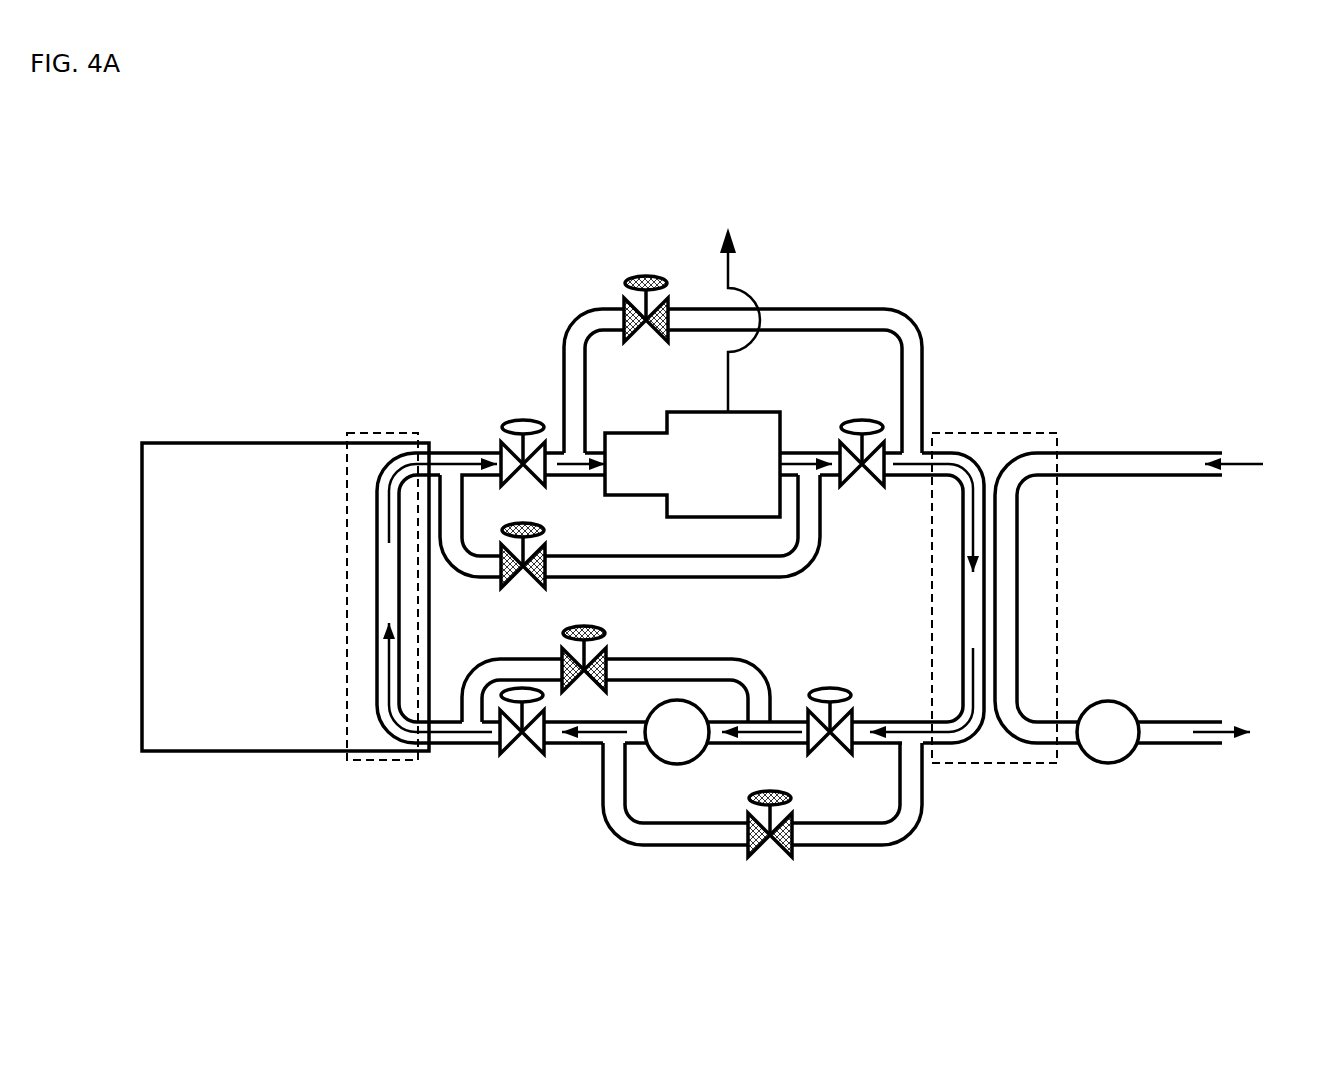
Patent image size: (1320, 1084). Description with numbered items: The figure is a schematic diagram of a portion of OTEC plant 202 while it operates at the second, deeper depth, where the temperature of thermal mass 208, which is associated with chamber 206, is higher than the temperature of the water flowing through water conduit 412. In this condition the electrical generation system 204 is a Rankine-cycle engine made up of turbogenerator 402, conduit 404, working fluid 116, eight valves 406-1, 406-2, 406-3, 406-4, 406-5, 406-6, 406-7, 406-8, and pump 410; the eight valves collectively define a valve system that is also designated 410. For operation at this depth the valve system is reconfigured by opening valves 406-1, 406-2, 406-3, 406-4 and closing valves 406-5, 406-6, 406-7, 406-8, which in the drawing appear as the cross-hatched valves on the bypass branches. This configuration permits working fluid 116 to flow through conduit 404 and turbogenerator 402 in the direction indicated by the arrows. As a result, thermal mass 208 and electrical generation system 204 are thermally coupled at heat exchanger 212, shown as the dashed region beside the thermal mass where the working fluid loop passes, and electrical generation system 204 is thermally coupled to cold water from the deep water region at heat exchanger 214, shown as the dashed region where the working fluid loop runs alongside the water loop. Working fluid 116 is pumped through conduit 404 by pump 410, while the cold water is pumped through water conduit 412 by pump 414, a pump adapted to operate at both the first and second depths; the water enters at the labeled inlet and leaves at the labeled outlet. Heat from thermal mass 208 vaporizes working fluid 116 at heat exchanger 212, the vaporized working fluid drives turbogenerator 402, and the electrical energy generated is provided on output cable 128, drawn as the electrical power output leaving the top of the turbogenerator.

The OTEC plant 202 is at (292, 146).
The electrical generation system 204 is at (436, 269).
The chamber 206 is at (225, 443).
The thermal mass 208 is at (234, 599).
The heat exchanger 212 is at (388, 432).
The working fluid 116 is at (913, 423).
The output cable 128 is at (740, 284).
The turbogenerator 402 is at (708, 412).
The conduit 404 is at (925, 362).
The valve 406-1 is at (523, 420).
The valve 406-2 is at (868, 421).
The valve 406-3 is at (830, 688).
The valve 406-4 is at (505, 748).
The valve 406-5 is at (544, 530).
The valve 406-6 is at (625, 283).
The valve 406-7 is at (780, 850).
The valve 406-8 is at (604, 633).
The pump 410 is at (686, 732).
The water conduit 412 is at (1087, 453).
The heat exchanger 214 is at (1057, 515).
The pump 414 is at (1110, 752).